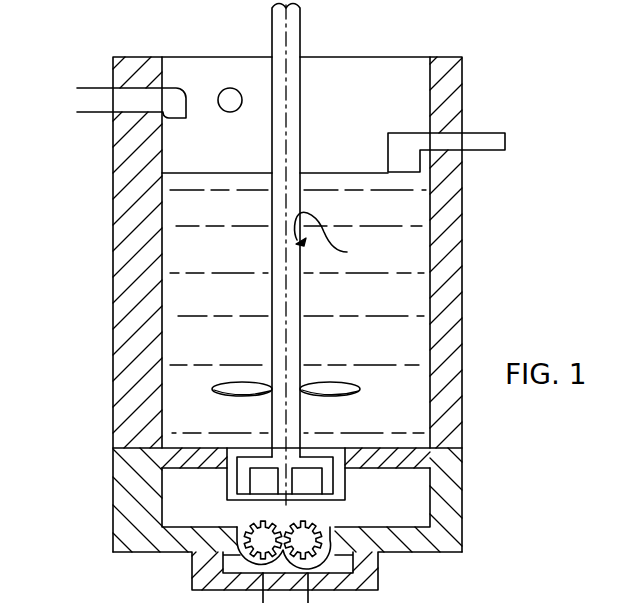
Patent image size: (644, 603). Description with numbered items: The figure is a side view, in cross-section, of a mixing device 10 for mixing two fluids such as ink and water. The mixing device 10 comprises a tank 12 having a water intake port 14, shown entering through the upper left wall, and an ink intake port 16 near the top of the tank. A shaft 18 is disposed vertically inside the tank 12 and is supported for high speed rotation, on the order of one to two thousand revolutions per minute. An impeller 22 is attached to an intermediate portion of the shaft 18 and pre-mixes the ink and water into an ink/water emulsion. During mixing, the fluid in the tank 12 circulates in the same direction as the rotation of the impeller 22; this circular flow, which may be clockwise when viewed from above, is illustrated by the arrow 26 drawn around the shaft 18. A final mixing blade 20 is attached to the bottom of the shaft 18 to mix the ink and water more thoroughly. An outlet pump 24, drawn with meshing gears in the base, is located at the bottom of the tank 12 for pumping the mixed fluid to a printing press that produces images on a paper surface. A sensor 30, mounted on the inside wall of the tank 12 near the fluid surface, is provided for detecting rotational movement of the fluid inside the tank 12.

The mixing device 10 is at (425, 50).
The tank 12 is at (463, 201).
The water intake port 14 is at (97, 88).
The ink intake port 16 is at (230, 88).
The shaft 18 is at (285, 278).
The final mixing blade 20 is at (335, 480).
The impeller 22 is at (364, 383).
The outlet pump 24 is at (247, 535).
The arrow 26 is at (348, 253).
The sensor 30 is at (410, 153).